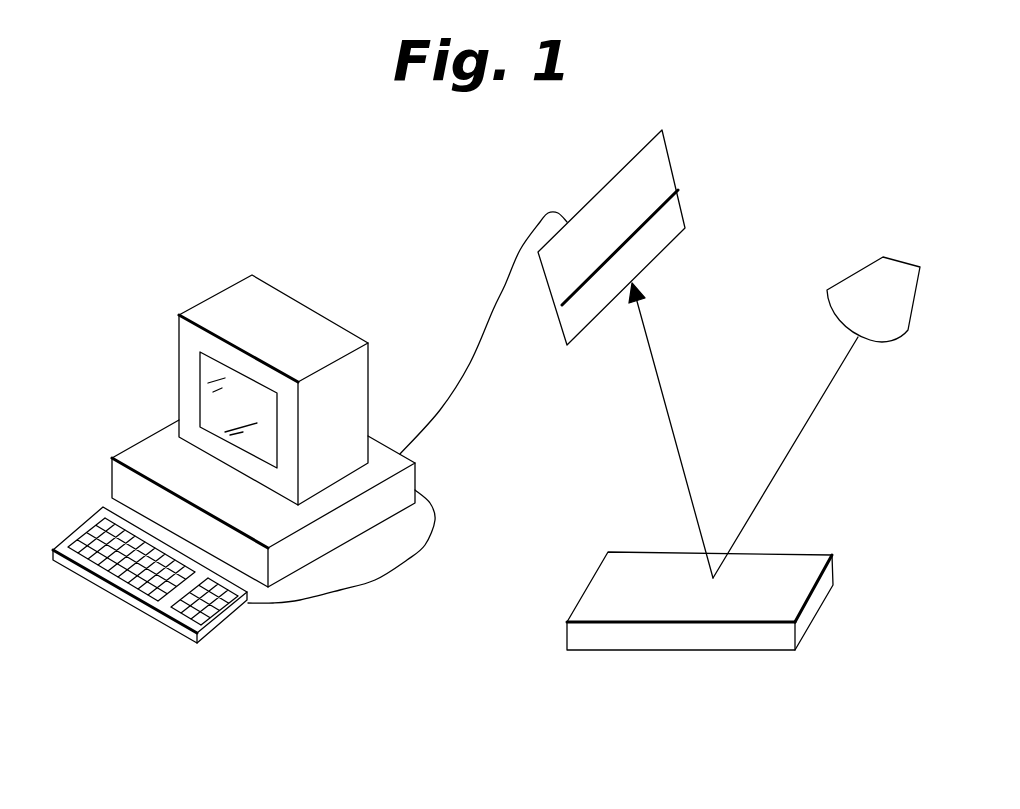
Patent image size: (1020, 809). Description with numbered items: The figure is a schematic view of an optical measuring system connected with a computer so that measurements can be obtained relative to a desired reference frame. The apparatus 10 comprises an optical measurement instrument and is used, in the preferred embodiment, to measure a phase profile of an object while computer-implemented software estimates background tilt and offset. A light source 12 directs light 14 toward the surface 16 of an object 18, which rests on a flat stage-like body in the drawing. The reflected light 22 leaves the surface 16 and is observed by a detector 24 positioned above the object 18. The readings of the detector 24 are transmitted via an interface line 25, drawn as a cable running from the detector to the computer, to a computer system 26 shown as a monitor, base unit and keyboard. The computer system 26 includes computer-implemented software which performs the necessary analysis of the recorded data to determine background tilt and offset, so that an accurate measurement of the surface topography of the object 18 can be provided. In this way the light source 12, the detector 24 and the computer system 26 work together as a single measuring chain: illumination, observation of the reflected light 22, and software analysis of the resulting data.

The apparatus 10 is at (482, 247).
The light source 12 is at (885, 256).
The light 14 is at (793, 458).
The surface 16 is at (783, 570).
The object 18 is at (807, 618).
The reflected light 22 is at (660, 385).
The detector 24 is at (653, 180).
The interface line 25 is at (475, 353).
The computer system 26 is at (317, 310).